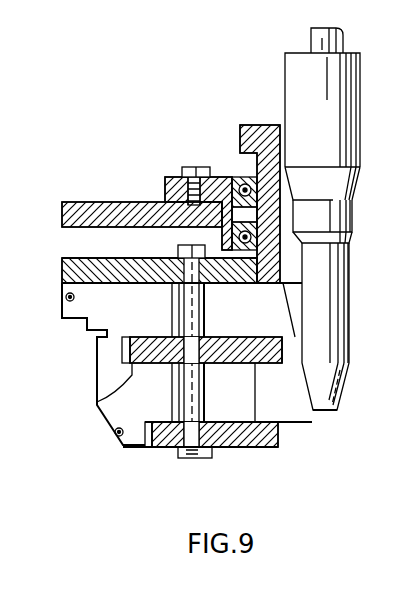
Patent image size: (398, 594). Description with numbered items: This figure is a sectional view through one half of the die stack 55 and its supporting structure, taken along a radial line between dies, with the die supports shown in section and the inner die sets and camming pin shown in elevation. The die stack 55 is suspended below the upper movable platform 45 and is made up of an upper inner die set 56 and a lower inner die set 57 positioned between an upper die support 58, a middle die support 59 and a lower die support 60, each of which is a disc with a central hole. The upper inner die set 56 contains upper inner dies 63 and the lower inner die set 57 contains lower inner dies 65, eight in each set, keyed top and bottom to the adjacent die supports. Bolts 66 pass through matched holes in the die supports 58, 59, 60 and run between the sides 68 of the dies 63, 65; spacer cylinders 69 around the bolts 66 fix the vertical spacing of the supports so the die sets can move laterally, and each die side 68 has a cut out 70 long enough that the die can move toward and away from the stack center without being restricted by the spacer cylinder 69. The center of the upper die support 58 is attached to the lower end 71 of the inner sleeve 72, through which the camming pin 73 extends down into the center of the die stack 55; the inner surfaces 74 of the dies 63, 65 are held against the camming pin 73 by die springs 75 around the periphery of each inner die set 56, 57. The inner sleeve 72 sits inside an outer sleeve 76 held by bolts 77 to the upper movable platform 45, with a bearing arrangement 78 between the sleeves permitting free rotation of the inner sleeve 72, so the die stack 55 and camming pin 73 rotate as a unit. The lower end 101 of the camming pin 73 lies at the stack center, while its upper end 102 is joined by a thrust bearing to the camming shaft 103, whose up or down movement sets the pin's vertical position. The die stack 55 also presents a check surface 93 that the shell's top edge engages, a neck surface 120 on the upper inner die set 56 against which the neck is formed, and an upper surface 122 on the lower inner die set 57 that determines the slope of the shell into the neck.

The upper movable platform 45 is at (80, 202).
The die stack 55 is at (62, 268).
The upper inner die set 56 is at (62, 318).
The lower inner die set 57 is at (105, 428).
The upper die support 58 is at (62, 260).
The middle die support 59 is at (95, 405).
The lower die support 60 is at (155, 450).
The upper inner die 63 is at (280, 312).
The lower inner die 65 is at (283, 405).
The bolt 66 is at (185, 268).
The die side 68 is at (330, 412).
The spacer cylinder 69 is at (177, 305).
The cut out 70 is at (247, 320).
The lower end of inner sleeve 71 is at (280, 270).
The inner sleeve 72 is at (285, 170).
The camming pin 73 is at (348, 108).
The inner surface of die 74 is at (305, 322).
The die spring 75 is at (66, 298).
The outer sleeve 76 is at (165, 182).
The bolt 77 is at (190, 168).
The bearing arrangement 78 is at (240, 160).
The check surface 93 is at (95, 330).
The lower end of camming pin 101 is at (340, 385).
The upper end of camming pin 102 is at (347, 70).
The camming shaft 103 is at (343, 37).
The neck surface 120 is at (95, 350).
The upper surface of lower inner die set 122 is at (100, 366).